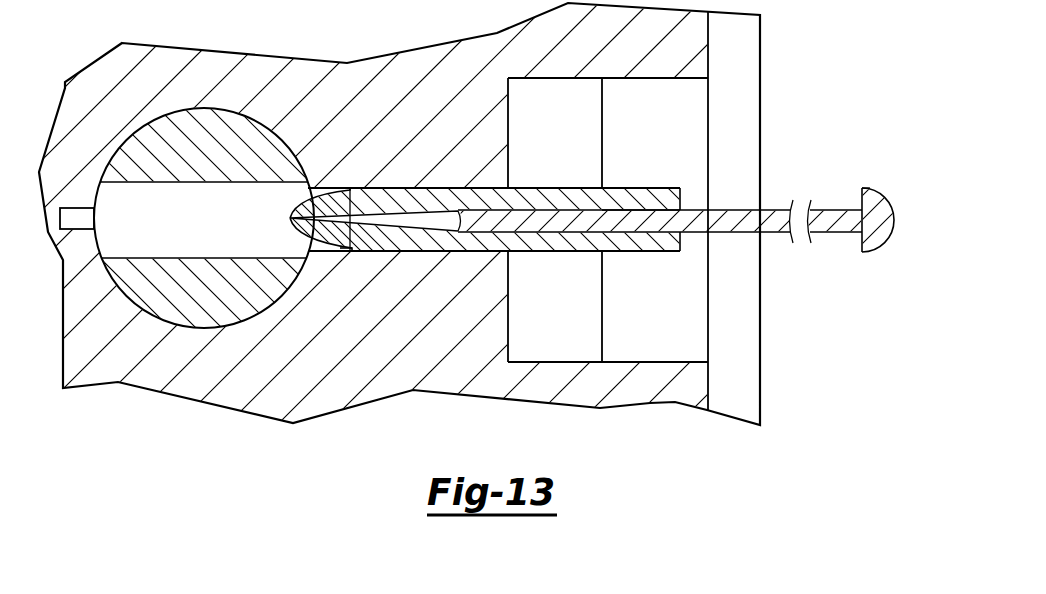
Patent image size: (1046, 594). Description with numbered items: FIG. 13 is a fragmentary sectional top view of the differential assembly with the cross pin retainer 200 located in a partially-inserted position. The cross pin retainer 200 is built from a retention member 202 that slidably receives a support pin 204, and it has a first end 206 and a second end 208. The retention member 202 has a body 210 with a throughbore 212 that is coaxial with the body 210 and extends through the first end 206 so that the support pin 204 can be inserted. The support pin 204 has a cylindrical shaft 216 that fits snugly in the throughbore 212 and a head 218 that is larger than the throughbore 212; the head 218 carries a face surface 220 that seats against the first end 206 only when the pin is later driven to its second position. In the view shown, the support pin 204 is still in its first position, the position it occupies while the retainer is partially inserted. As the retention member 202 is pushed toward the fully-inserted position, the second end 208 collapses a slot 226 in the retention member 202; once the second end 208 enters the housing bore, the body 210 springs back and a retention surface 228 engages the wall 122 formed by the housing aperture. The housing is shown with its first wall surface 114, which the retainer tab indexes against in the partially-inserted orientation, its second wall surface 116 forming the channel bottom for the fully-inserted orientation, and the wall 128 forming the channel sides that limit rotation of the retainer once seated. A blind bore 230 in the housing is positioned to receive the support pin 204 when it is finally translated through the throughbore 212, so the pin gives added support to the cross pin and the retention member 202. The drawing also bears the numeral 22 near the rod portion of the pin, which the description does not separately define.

The shaft 22 is at (683, 240).
The first wall surface 114 is at (602, 343).
The second wall surface 116 is at (510, 290).
The wall 122 is at (308, 186).
The wall 128 is at (540, 80).
The cross pin retainer 200 is at (620, 165).
The retention member 202 is at (579, 182).
The support pin 204 is at (908, 203).
The first end 206 is at (692, 188).
The second end 208 is at (284, 208).
The body 210 is at (531, 182).
The throughbore 212 is at (610, 210).
The shaft 216 is at (483, 212).
The head 218 is at (888, 238).
The face surface 220 is at (860, 192).
The slot 226 is at (415, 218).
The retention surface 228 is at (362, 251).
The blind bore 230 is at (82, 208).